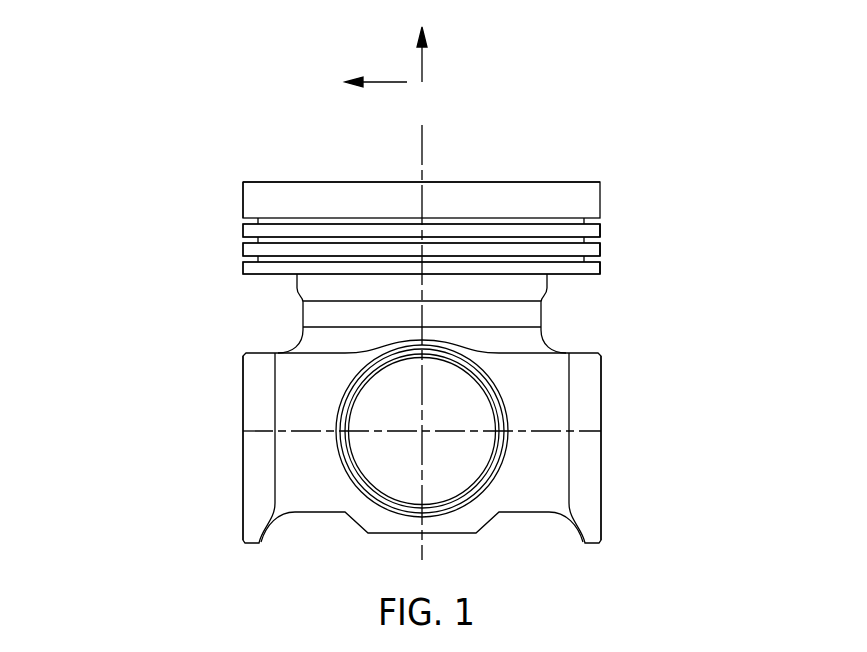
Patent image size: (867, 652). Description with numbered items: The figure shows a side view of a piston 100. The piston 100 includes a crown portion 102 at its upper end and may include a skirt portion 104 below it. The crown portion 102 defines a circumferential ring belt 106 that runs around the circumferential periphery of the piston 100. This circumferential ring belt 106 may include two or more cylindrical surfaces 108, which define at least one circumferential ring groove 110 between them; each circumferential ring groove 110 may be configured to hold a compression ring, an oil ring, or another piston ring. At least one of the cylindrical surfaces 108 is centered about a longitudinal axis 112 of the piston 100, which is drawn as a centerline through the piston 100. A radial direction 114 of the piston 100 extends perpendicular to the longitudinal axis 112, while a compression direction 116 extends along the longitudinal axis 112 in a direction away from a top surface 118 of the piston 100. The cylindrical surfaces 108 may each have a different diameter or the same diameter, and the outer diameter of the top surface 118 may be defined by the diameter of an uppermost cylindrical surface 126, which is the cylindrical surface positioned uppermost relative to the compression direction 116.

The piston 100 is at (667, 52).
The crown portion 102 is at (738, 177).
The skirt portion 104 is at (620, 354).
The circumferential ring belt 106 is at (645, 221).
The cylindrical surfaces 108 is at (243, 206).
The circumferential ring groove 110 is at (600, 221).
The longitudinal axis 112 is at (423, 144).
The radial direction 114 is at (374, 82).
The compression direction 116 is at (423, 61).
The top surface 118 is at (324, 181).
The uppermost cylindrical surface 126 is at (243, 191).